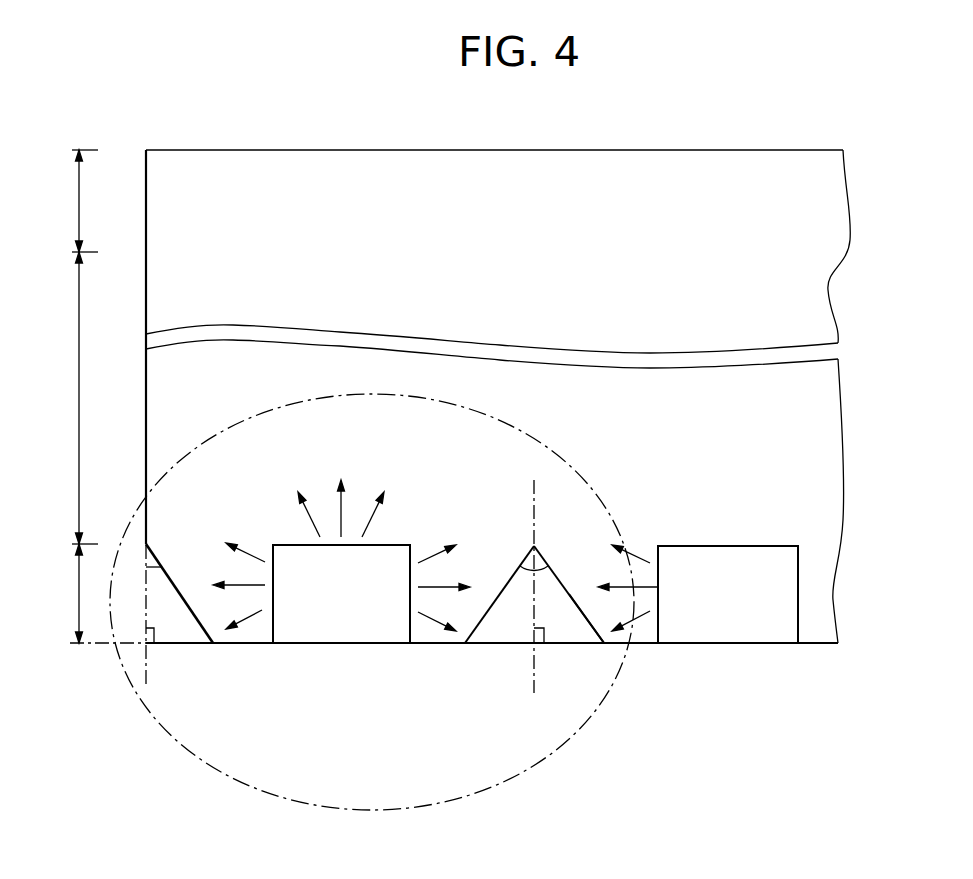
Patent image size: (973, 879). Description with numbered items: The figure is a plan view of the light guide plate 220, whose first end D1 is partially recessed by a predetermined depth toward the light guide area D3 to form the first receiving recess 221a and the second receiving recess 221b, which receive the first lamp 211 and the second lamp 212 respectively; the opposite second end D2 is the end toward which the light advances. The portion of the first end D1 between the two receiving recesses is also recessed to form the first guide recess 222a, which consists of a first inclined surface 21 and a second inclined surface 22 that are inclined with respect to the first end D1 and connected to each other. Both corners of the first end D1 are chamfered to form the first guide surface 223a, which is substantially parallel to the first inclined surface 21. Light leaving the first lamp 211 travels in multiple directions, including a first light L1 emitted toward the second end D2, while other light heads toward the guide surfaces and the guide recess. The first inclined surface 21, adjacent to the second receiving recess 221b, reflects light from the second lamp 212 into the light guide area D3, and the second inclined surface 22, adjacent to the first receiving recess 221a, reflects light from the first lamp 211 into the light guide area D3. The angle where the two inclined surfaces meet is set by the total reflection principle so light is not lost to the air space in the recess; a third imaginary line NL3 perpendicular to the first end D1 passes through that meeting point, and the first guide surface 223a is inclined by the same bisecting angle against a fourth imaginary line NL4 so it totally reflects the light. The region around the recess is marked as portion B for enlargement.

The light guide plate 220 is at (866, 262).
The first receiving recess 221a is at (302, 560).
The second receiving recess 221b is at (690, 560).
The first lamp 211 is at (340, 600).
The second lamp 212 is at (720, 600).
The first inclined surface 21 is at (576, 590).
The second inclined surface 22 is at (492, 588).
The first guide recess 222a is at (560, 620).
The first guide surface 223a is at (186, 615).
The first light L1 is at (372, 518).
The third imaginary line NL3 is at (530, 665).
The fourth imaginary line NL4 is at (143, 673).
The first end D1 is at (98, 593).
The second end D2 is at (74, 201).
The light guide area D3 is at (74, 398).
The portion B is at (535, 770).